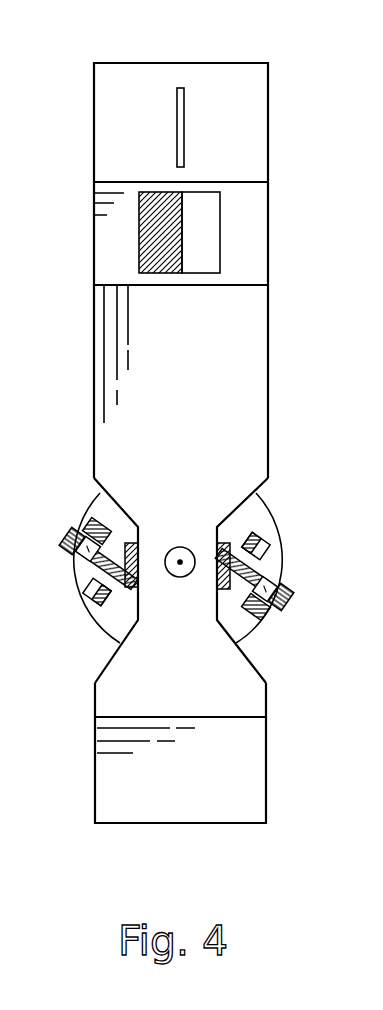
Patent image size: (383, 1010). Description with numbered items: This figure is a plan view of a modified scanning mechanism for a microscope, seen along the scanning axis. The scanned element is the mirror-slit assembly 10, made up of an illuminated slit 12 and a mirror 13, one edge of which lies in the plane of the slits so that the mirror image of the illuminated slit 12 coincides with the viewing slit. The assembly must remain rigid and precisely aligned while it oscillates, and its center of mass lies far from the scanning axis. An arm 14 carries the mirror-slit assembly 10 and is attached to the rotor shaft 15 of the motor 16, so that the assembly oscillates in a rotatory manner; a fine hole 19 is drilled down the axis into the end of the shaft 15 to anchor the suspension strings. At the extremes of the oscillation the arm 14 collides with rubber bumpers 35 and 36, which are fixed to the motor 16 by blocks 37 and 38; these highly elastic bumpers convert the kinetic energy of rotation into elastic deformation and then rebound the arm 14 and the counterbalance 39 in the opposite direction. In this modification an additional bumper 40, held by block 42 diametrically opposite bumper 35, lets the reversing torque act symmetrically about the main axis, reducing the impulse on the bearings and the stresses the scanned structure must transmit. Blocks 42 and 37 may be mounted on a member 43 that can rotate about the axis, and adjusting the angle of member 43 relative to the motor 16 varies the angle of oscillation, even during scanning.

The mirror-slit assembly 10 is at (270, 162).
The illuminated slit 12 is at (187, 108).
The mirror 13 is at (183, 250).
The arm 14 is at (270, 430).
The rotor shaft 15 is at (175, 548).
The motor 16 is at (265, 512).
The hole 19 is at (180, 562).
The rubber bumper 35 is at (253, 630).
The rubber bumper 36 is at (100, 633).
The block 37 is at (278, 577).
The block 38 is at (87, 599).
The counterbalance 39 is at (266, 737).
The rubber bumper 40 is at (91, 525).
The block 42 is at (78, 560).
The member 43 is at (67, 547).